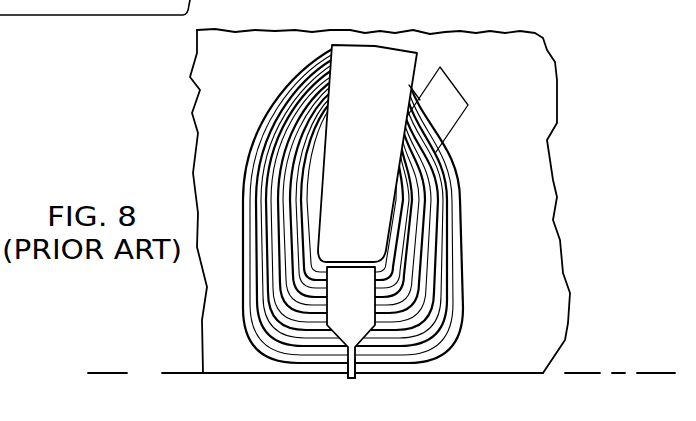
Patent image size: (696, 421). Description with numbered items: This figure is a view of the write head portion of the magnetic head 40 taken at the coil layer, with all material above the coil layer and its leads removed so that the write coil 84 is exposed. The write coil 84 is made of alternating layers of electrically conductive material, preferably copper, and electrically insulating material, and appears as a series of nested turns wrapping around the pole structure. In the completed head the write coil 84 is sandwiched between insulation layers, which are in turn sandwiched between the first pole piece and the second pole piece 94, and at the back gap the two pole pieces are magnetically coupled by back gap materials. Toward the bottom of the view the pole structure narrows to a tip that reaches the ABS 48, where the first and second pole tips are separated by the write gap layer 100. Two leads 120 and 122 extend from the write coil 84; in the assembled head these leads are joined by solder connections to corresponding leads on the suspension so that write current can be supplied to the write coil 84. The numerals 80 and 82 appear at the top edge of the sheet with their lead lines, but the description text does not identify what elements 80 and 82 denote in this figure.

The magnetic head 40 is at (472, 188).
The ABS 48 is at (144, 372).
The slider element 80 is at (21, 0).
The slider element 82 is at (72, 0).
The write coil 84 is at (445, 267).
The second pole piece 94 is at (364, 309).
The write gap layer 100 is at (351, 378).
The lead 120 is at (375, 152).
The lead 122 is at (452, 79).